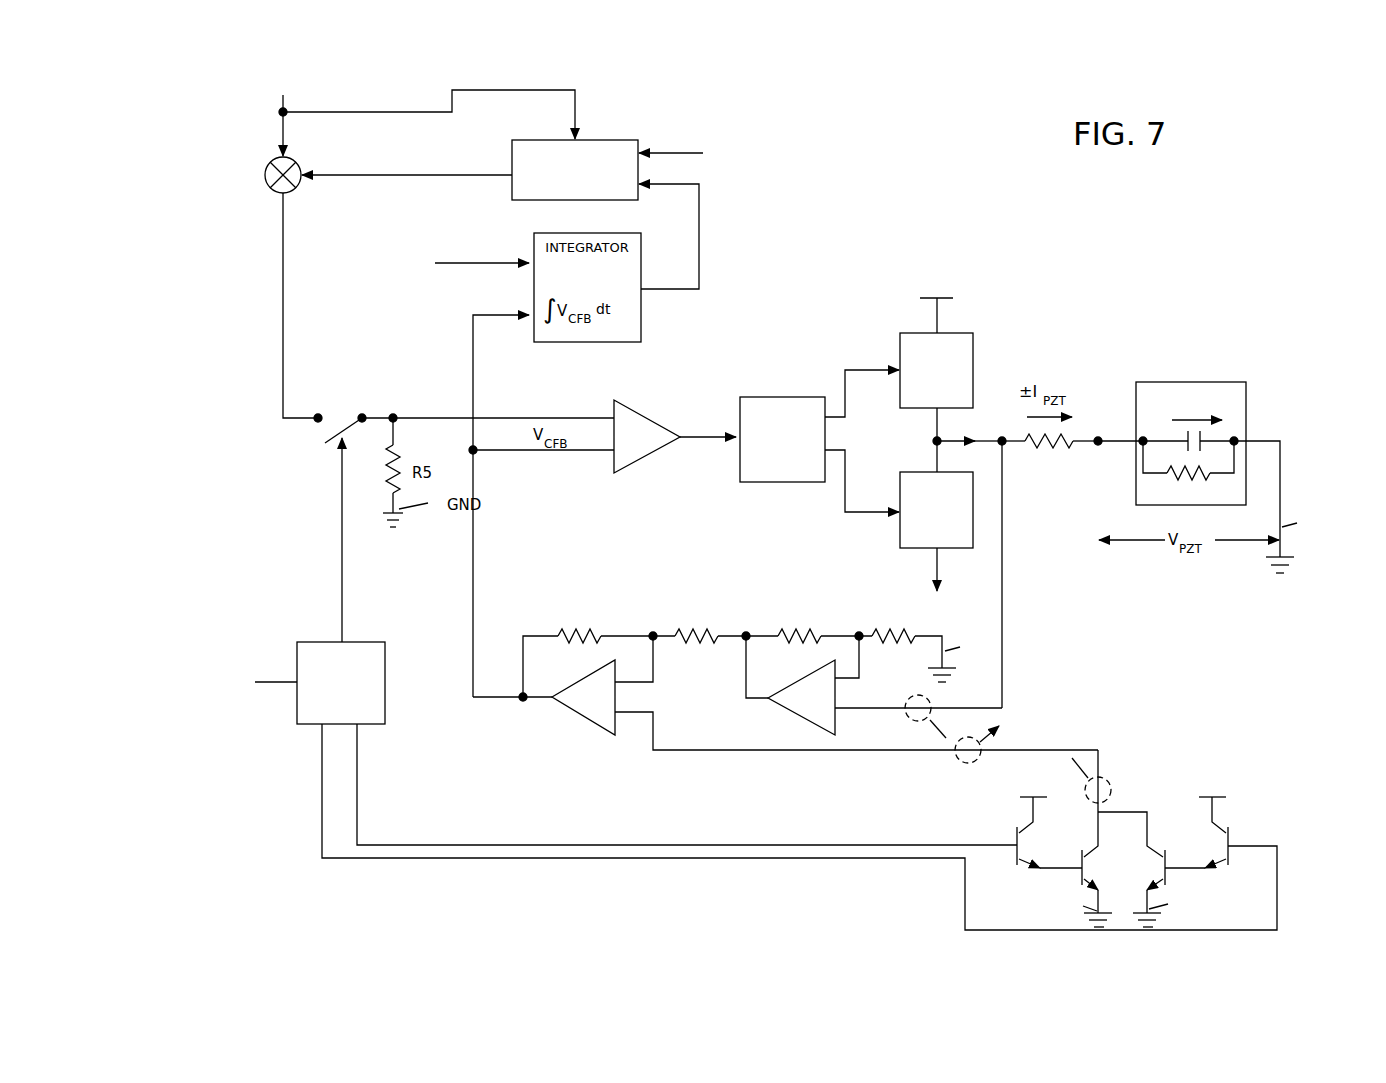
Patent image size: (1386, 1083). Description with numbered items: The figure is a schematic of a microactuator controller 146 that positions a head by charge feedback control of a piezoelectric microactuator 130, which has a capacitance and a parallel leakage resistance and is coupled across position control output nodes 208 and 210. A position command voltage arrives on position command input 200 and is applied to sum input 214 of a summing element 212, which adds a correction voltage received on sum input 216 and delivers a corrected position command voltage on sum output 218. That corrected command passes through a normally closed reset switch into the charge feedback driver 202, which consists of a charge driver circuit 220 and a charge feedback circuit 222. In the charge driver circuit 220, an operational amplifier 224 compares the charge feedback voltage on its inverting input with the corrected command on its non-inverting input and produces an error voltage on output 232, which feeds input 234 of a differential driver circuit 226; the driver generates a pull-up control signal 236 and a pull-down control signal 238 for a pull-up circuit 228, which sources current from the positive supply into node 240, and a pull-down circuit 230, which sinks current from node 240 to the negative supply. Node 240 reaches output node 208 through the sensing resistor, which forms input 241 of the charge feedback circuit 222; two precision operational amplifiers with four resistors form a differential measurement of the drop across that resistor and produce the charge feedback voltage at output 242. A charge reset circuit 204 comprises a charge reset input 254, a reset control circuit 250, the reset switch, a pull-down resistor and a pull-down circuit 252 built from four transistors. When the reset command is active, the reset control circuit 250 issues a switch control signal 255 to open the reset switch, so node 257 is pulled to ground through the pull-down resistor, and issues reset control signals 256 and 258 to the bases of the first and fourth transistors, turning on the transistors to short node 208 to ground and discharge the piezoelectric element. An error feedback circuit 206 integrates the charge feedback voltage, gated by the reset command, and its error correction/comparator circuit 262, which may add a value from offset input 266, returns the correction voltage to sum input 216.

The microactuator 130 is at (1212, 382).
The microactuator controller 146 is at (1173, 266).
The position command input 200 is at (280, 110).
The charge feedback driver 202 is at (609, 535).
The charge reset circuit 204 is at (413, 716).
The error feedback circuit 206 is at (749, 209).
The position control output node 208 is at (1095, 436).
The position control output node 210 is at (1263, 438).
The summing element 212 is at (294, 193).
The sum input 214 is at (280, 123).
The sum input 216 is at (340, 175).
The sum output 218 is at (283, 202).
The charge driver circuit 220 is at (762, 366).
The charge feedback circuit 222 is at (689, 586).
The operational amplifier 224 is at (645, 413).
The differential driver circuit 226 is at (815, 395).
The pull-up circuit 228 is at (905, 332).
The pull-down circuit 230 is at (913, 550).
The output 232 is at (687, 441).
The input 234 is at (712, 441).
The pull-up control signal 236 is at (855, 368).
The pull-down control signal 238 is at (857, 512).
The node 240 is at (933, 441).
The input 241 is at (1048, 489).
The output 242 is at (496, 699).
The reset control circuit 250 is at (385, 642).
The pull-down circuit 252 is at (1179, 716).
The charge reset input 254 is at (457, 266).
The switch control signal 255 is at (340, 547).
The reset control signal 256 is at (358, 782).
The node 257 is at (397, 413).
The reset control signal 258 is at (320, 786).
The error correction/comparator circuit 262 is at (613, 140).
The offset input 266 is at (673, 152).